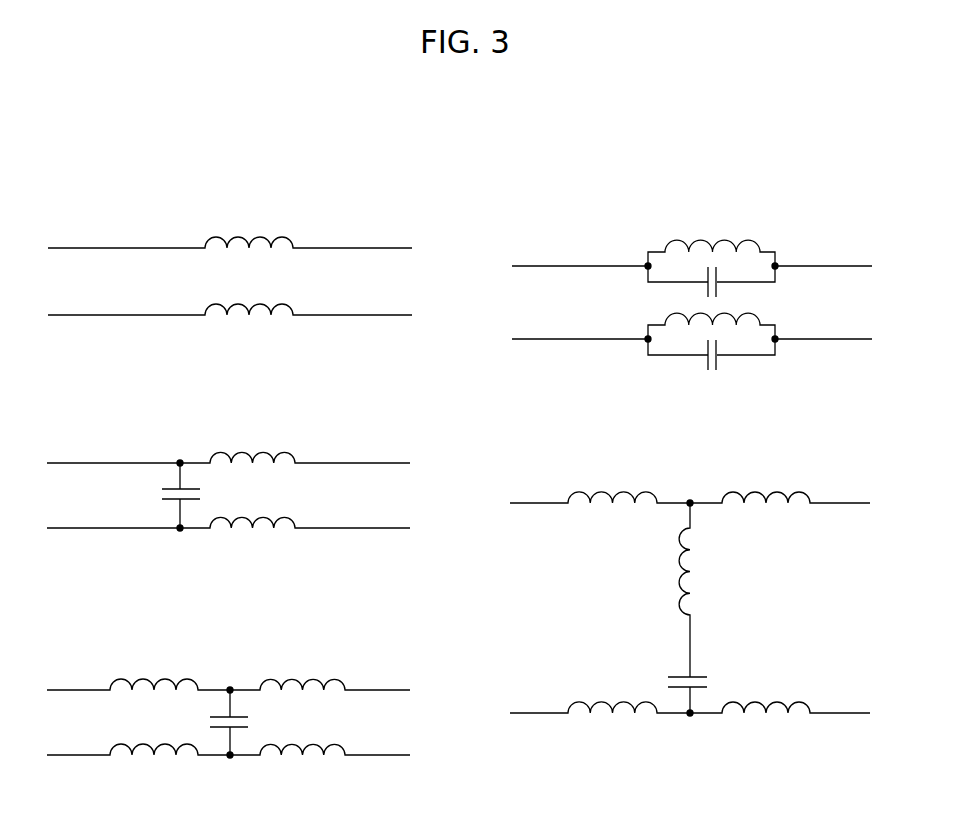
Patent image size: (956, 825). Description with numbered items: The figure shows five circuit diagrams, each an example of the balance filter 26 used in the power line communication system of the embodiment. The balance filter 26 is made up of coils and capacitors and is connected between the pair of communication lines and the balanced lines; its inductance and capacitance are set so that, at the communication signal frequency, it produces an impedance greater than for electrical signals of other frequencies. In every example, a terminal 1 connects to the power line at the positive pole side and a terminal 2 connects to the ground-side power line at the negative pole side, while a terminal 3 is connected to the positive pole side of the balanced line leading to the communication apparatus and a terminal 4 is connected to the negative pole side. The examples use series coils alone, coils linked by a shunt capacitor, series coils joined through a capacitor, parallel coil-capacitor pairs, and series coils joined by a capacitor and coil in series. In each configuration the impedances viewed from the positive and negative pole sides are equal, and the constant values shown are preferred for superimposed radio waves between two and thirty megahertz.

The balance filter 26 is at (447, 458).
The terminal 1 is at (313, 456).
The terminal 2 is at (313, 521).
The terminal 3 is at (607, 456).
The terminal 4 is at (607, 522).